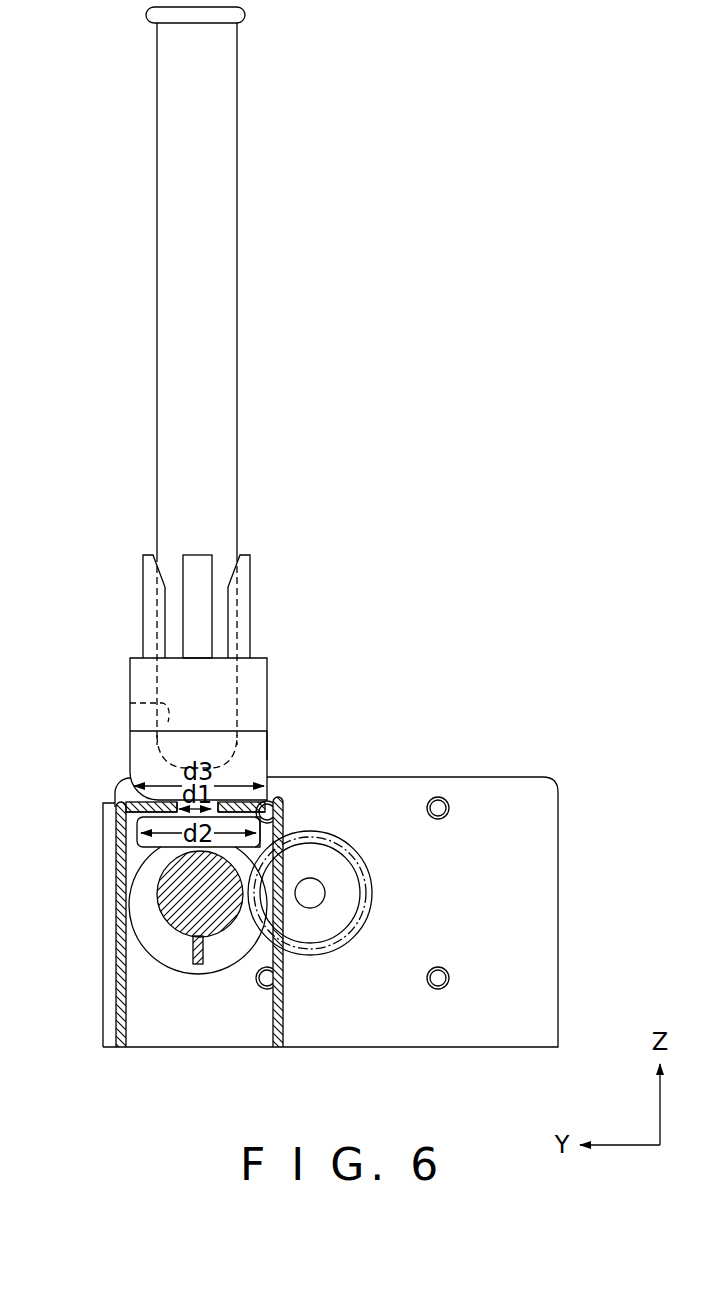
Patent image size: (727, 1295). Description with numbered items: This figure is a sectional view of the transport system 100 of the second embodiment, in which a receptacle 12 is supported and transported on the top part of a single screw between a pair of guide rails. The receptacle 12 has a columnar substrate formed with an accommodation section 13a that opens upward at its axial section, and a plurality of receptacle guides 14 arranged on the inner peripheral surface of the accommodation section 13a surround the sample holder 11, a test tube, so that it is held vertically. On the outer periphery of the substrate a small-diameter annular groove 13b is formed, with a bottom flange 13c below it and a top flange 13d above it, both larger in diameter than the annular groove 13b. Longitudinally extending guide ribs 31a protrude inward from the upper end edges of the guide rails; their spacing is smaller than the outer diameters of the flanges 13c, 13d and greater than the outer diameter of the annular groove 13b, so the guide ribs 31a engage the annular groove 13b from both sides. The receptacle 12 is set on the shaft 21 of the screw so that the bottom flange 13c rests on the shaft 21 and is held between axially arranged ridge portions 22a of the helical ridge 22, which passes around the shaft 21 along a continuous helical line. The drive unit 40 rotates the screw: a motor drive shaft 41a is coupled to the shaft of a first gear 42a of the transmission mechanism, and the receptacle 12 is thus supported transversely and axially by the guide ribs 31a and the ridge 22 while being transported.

The transport system 100 is at (394, 118).
The sample holder 11 is at (238, 183).
The receptacle guides 14 is at (148, 566).
The receptacle 12 is at (267, 677).
The accommodation section 13a is at (130, 703).
The annular groove 13b is at (216, 805).
The bottom flange 13c is at (262, 828).
The top flange 13d is at (267, 748).
The guide ribs 31a is at (158, 797).
The ridge portions 22a is at (113, 818).
The shaft 21 is at (160, 912).
The helical ridge 22 is at (180, 948).
The drive unit 40 is at (458, 787).
The drive shaft 41a is at (328, 893).
The first gear 42a is at (366, 923).